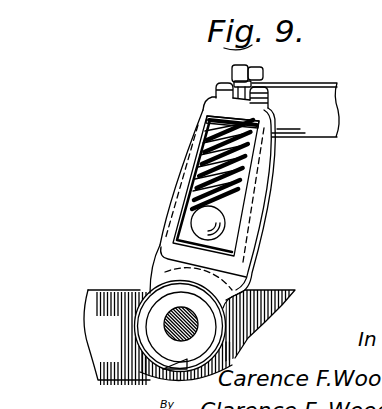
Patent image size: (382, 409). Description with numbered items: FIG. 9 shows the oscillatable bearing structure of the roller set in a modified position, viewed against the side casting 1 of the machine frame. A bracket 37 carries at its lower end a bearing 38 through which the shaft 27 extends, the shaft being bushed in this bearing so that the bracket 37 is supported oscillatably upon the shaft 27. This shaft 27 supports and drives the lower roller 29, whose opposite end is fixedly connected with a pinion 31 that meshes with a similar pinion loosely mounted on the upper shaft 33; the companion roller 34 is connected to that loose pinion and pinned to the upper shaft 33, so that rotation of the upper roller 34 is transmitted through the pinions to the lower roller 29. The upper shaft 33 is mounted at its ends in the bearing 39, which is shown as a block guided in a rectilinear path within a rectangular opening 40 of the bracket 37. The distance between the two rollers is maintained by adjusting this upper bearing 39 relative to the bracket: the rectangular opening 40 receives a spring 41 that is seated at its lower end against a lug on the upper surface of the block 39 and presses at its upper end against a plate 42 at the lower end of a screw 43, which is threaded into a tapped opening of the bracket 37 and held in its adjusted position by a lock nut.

The side casting 1 is at (290, 291).
The shaft 27 is at (170, 326).
The lower roller 29 is at (133, 352).
The pinion 31 is at (135, 360).
The upper shaft 33 is at (222, 217).
The companion roller 34 is at (250, 181).
The bracket 37 is at (258, 263).
The bearing 38 is at (150, 296).
The bearing 39 is at (182, 228).
The rectangular opening 40 is at (194, 176).
The spring 41 is at (197, 160).
The plate 42 is at (207, 119).
The screw 43 is at (232, 72).